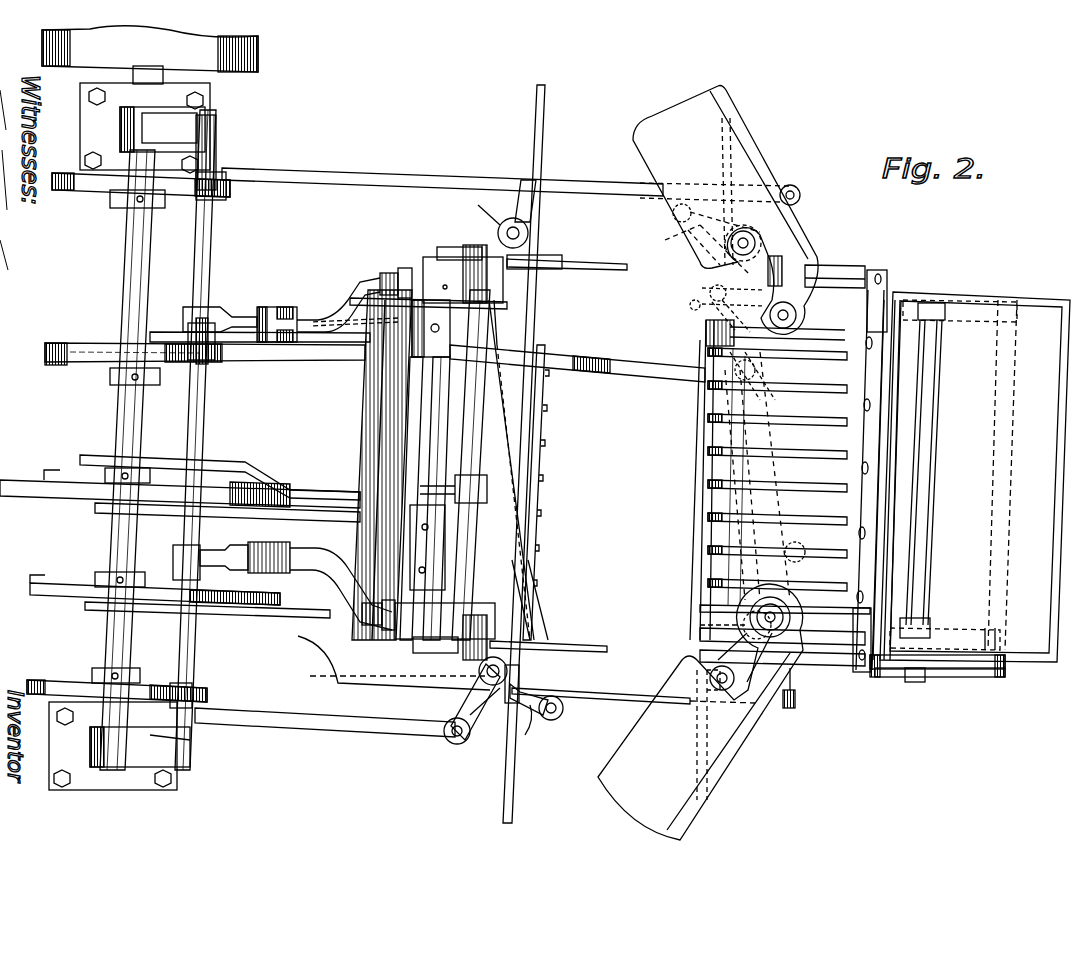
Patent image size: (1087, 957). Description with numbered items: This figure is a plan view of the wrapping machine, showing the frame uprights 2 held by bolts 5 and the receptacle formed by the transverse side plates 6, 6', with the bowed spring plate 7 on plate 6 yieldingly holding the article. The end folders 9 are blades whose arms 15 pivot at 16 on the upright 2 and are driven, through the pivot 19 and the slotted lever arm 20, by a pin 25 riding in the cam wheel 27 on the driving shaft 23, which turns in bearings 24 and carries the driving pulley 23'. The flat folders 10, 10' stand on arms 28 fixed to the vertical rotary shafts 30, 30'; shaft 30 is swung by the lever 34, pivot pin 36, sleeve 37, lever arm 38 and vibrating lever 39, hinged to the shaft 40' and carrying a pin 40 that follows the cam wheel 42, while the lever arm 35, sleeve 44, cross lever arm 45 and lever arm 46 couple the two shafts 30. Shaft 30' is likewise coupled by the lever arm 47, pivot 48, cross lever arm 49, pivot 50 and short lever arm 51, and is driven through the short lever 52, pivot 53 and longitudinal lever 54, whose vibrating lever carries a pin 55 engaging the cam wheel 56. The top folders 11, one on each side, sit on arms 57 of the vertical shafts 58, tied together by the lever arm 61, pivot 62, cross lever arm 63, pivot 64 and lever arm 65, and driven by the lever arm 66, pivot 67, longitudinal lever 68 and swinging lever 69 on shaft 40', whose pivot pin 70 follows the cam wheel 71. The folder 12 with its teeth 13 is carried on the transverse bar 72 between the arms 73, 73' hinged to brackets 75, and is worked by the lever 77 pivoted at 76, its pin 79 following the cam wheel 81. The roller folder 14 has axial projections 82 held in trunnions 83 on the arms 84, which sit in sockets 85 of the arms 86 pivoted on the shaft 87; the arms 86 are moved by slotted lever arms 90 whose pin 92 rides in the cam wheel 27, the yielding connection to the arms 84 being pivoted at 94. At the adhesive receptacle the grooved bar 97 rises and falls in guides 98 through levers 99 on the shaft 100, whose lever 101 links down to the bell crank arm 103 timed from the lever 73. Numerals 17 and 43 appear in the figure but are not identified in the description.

The upright 2 is at (400, 635).
The bolt 5 is at (95, 150).
The transverse side plate 6 is at (542, 492).
The transverse side plate 6' is at (679, 490).
The spring plate 7 is at (540, 455).
The folder 9 is at (596, 645).
The folder 10 is at (541, 454).
The folder 10' is at (737, 460).
The folder 11 is at (645, 780).
The folder 12 is at (807, 480).
The teeth 13 is at (708, 490).
The roller folder 14 is at (372, 410).
The arm 15 is at (415, 648).
The pivot 16 is at (462, 655).
The rod 17 is at (472, 560).
The pivot 19 is at (487, 486).
The lever arm 20 is at (330, 485).
The driving shaft 23 is at (111, 460).
The driving wheel or pulley 23' is at (177, 55).
The bearing 24 is at (97, 790).
The pin 25 is at (272, 482).
The cam wheel 27 is at (62, 478).
The arm 28 is at (505, 700).
The vertical rotary shaft 30 is at (491, 416).
The vertical rotary shaft 30' is at (774, 479).
The lever 34 is at (478, 738).
The lever arm 35 is at (532, 728).
The pivot pin 36 is at (450, 745).
The sleeve 37 is at (462, 715).
The lever arm 38 is at (350, 735).
The vibrating lever arm 39 is at (180, 740).
The pin 40 is at (170, 674).
The shaft 40' is at (220, 440).
The cam wheel 42 is at (117, 673).
The roller 43 is at (563, 710).
The sleeve 44 is at (555, 720).
The lever arm 45 is at (525, 600).
The lever arm 46 is at (480, 206).
The lever arm 47 is at (720, 665).
The pivot 48 is at (700, 622).
The lever arm 49 is at (700, 312).
The pivot 50 is at (676, 218).
The short lever arm 51 is at (692, 250).
The short lever 52 is at (755, 240).
The pivot 53 is at (800, 190).
The lever 54 is at (582, 183).
The pin 55 is at (232, 188).
The cam wheel 56 is at (222, 198).
The arm 57 is at (790, 645).
The vertical rotary shaft 58 is at (805, 622).
The lever arm 61 is at (788, 593).
The pivot 62 is at (805, 556).
The lever arm 63 is at (790, 467).
The pivot 64 is at (692, 308).
The lever arm 65 is at (708, 292).
The lever arm 66 is at (752, 375).
The pivot 67 is at (757, 385).
The lever 68 is at (632, 362).
The swinging lever arm 69 is at (155, 325).
The pivot pin 70 is at (170, 320).
The cam wheel 71 is at (70, 340).
The transverse bar 72 is at (890, 296).
The arm 73 is at (867, 656).
The arm 73' is at (888, 282).
The bracket 75 is at (763, 271).
The pivot 76 is at (800, 685).
The lever 77 is at (628, 698).
The pin 79 is at (268, 610).
The cam wheel 81 is at (62, 590).
The axial projection 82 is at (385, 632).
The trunnion 83 is at (362, 620).
The arm 84 is at (345, 600).
The socket 85 is at (285, 578).
The arm 86 is at (340, 560).
The shaft 87 is at (495, 400).
The lever arm 90 is at (298, 548).
The pin 92 is at (262, 545).
The pivot 94 is at (178, 555).
The grooved bar 97 is at (928, 432).
The guide 98 is at (930, 625).
The lever 99 is at (985, 625).
The shaft 100 is at (1000, 560).
The lever 101 is at (960, 676).
The bell crank arm 103 is at (900, 680).